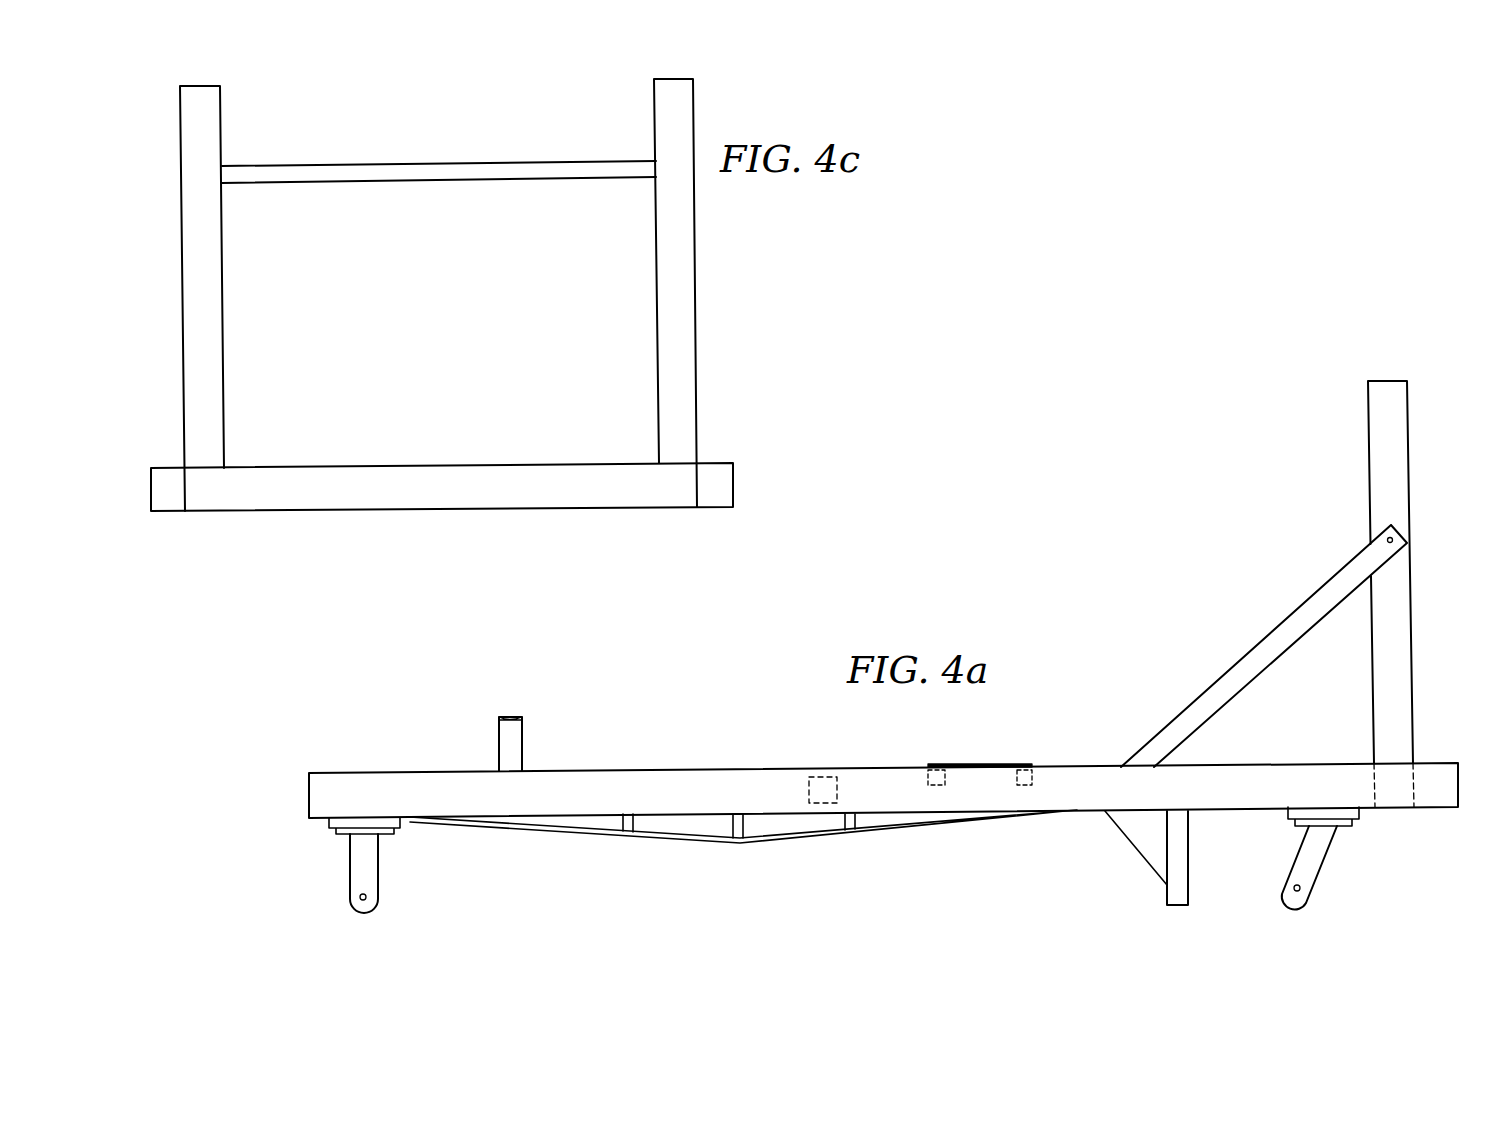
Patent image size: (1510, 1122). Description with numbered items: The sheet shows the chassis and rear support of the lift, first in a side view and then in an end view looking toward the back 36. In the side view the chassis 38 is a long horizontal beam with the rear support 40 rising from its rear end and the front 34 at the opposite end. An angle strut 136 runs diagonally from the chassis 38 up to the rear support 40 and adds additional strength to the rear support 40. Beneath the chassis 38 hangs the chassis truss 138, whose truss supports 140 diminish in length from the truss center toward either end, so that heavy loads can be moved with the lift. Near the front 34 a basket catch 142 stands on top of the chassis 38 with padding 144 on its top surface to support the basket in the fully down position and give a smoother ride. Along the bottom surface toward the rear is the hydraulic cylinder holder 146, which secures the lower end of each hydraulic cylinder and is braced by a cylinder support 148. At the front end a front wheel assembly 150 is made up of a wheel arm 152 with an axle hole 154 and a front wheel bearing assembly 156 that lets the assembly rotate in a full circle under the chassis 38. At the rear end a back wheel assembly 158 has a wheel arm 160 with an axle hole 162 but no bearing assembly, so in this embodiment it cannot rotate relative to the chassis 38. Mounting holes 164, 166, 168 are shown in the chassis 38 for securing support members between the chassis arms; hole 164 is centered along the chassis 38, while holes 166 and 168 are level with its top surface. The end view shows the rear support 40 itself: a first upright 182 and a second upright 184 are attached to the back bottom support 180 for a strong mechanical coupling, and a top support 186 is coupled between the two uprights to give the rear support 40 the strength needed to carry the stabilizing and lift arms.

In FIG. 4A, the front 34 is at (852, 794).
In FIG. 4A, the back 36 is at (1307, 594).
In FIG. 4A, the chassis 38 is at (1437, 808).
In FIG. 4C, the rear support 40 is at (468, 295).
In FIG. 4A, the rear support 40 is at (1368, 438).
In FIG. 4A, the angle strut 136 is at (1262, 640).
In FIG. 4A, the chassis truss 138 is at (902, 830).
In FIG. 4A, the truss supports 140 is at (624, 824).
In FIG. 4A, the basket catch 142 is at (531, 717).
In FIG. 4A, the padding 144 is at (504, 716).
In FIG. 4A, the hydraulic cylinder holder 146 is at (1190, 893).
In FIG. 4A, the cylinder support 148 is at (1128, 845).
In FIG. 4A, the front wheel assemblies 150 is at (353, 871).
In FIG. 4A, the wheel arm 152 is at (380, 858).
In FIG. 4A, the axle hole 154 is at (367, 898).
In FIG. 4A, the front wheel bearing assembly 156 is at (328, 831).
In FIG. 4A, the back wheel assemblies 158 is at (1323, 866).
In FIG. 4A, the wheel arm 160 is at (1300, 848).
In FIG. 4A, the axle hole 162 is at (1294, 887).
In FIG. 4A, the mounting hole 164 is at (820, 775).
In FIG. 4A, the mounting hole 166 is at (928, 772).
In FIG. 4A, the mounting hole 168 is at (1035, 771).
In FIG. 4C, the back bottom support 180 is at (370, 467).
In FIG. 4C, the first upright 182 is at (222, 325).
In FIG. 4C, the second upright 184 is at (696, 358).
In FIG. 4C, the top support 186 is at (556, 161).